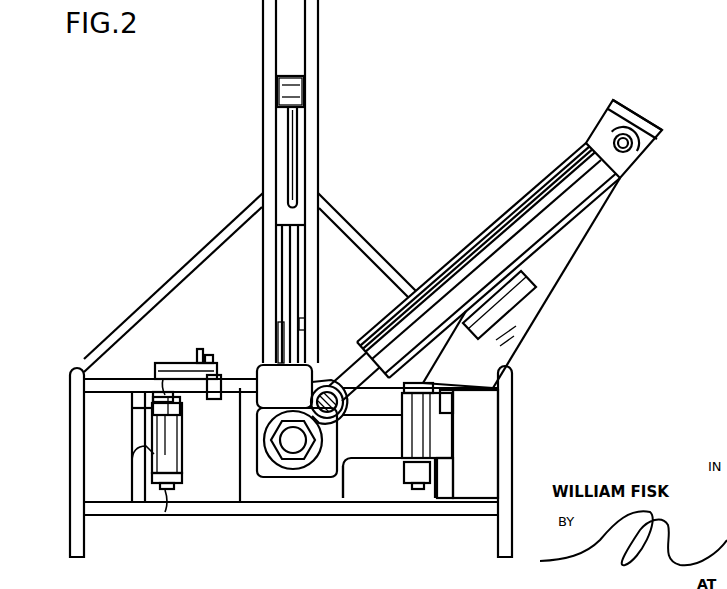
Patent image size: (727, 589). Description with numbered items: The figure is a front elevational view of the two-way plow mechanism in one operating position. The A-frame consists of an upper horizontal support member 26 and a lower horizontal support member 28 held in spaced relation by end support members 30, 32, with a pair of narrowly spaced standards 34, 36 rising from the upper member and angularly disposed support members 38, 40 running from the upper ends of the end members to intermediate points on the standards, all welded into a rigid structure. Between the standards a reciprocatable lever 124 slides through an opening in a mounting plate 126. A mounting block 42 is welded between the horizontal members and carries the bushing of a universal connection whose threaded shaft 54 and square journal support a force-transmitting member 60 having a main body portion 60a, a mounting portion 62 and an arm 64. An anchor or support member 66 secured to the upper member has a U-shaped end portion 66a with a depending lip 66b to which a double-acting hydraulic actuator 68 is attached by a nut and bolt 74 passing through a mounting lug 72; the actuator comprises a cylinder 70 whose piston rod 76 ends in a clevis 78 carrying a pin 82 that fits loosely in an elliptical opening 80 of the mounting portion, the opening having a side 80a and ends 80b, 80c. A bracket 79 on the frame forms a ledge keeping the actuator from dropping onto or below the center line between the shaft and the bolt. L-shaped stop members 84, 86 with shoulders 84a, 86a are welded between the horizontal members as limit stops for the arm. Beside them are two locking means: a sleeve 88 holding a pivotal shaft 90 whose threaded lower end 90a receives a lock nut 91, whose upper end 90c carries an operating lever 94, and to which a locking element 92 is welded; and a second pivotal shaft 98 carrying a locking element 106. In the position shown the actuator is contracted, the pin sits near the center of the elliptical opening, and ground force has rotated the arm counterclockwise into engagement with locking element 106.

The upper horizontal support member 26 is at (72, 366).
The lower horizontal support member 28 is at (195, 508).
The end support member 30 is at (70, 442).
The end support member 32 is at (512, 428).
The standard 34 is at (263, 56).
The standard 36 is at (318, 51).
The angularly disposed support member 38 is at (201, 254).
The angularly disposed support member 40 is at (368, 244).
The mounting block 42 is at (312, 492).
The shaft 54 is at (284, 444).
The force-transmitting member 60 is at (354, 452).
The main body portion 60a is at (332, 460).
The mounting portion 62 is at (258, 395).
The arm 64 is at (436, 444).
The anchor or support member 66 is at (550, 272).
The U-shaped end portion 66a is at (654, 124).
The depending lip 66b is at (660, 138).
The hydraulic ram or actuator 68 is at (503, 227).
The cylinder 70 is at (540, 196).
The mounting tab or lug 72 is at (604, 146).
The nut and bolt 74 is at (631, 131).
The piston rod 76 is at (386, 344).
The clevis 78 is at (338, 382).
The bracket 79 is at (513, 302).
The elliptical through opening 80 is at (310, 384).
The side of opening 80a is at (284, 398).
The end of opening 80b is at (316, 372).
The end of opening 80c is at (334, 417).
The pin 82 is at (341, 400).
The stop member 84 is at (132, 434).
The shoulder 84a is at (138, 472).
The stop member 86 is at (448, 405).
The shoulder 86a is at (450, 444).
The tubular member or sleeve 88 is at (170, 448).
The pivotal shaft 90 is at (167, 396).
The lower end of shaft 90a is at (167, 492).
The upper end portion of shaft 90c is at (168, 364).
The adjustable lock nut or thrust member 91 is at (158, 475).
The locking element 92 is at (152, 410).
The operating lever 94 is at (182, 362).
The pivotal shaft 98 is at (418, 386).
The locking element 106 is at (427, 441).
The reciprocatable lever 124 is at (297, 167).
The mounting plate 126 is at (306, 195).